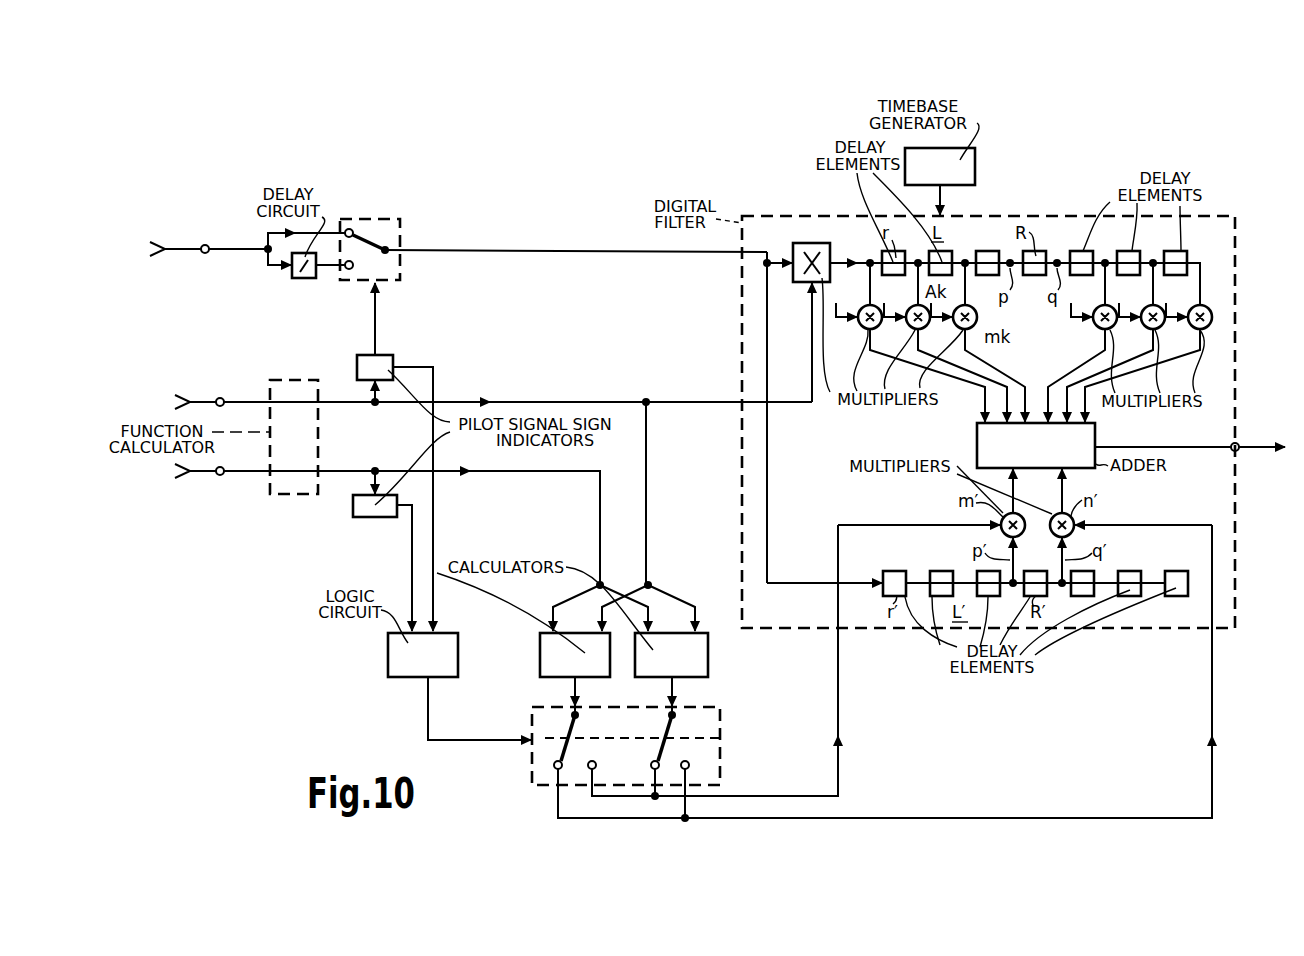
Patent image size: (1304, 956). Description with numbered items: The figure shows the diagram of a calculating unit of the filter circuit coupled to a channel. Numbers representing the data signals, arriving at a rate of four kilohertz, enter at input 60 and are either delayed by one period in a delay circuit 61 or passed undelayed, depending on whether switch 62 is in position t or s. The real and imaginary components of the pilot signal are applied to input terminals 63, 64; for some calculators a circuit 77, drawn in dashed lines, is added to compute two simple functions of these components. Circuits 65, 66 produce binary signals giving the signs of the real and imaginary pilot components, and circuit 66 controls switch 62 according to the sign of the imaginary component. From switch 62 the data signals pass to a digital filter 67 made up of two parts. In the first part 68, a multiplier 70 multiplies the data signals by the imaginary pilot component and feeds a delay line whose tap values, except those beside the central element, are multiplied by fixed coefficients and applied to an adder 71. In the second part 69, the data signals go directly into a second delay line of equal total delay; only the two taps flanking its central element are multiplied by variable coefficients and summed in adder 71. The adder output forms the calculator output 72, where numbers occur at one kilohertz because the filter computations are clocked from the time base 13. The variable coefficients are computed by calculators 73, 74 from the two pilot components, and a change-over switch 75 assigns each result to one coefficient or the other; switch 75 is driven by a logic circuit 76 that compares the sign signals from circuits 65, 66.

The time base 13 is at (975, 164).
The input 60 is at (206, 245).
The delay circuit 61 is at (304, 279).
The switch 62 is at (391, 218).
The input terminal 63 is at (221, 476).
The input terminal 64 is at (222, 398).
The circuit 65 is at (370, 517).
The circuit 66 is at (387, 358).
The digital filter 67 is at (772, 216).
The first part of digital filter 68 is at (1043, 252).
The second part of digital filter 69 is at (1080, 677).
The multiplier 70 is at (808, 243).
The adder 71 is at (980, 438).
The output 72 is at (1238, 443).
The calculator 73 is at (556, 655).
The calculator 74 is at (698, 656).
The change-over switch 75 is at (720, 738).
The logic circuit 76 is at (400, 652).
The circuit 77 is at (297, 378).